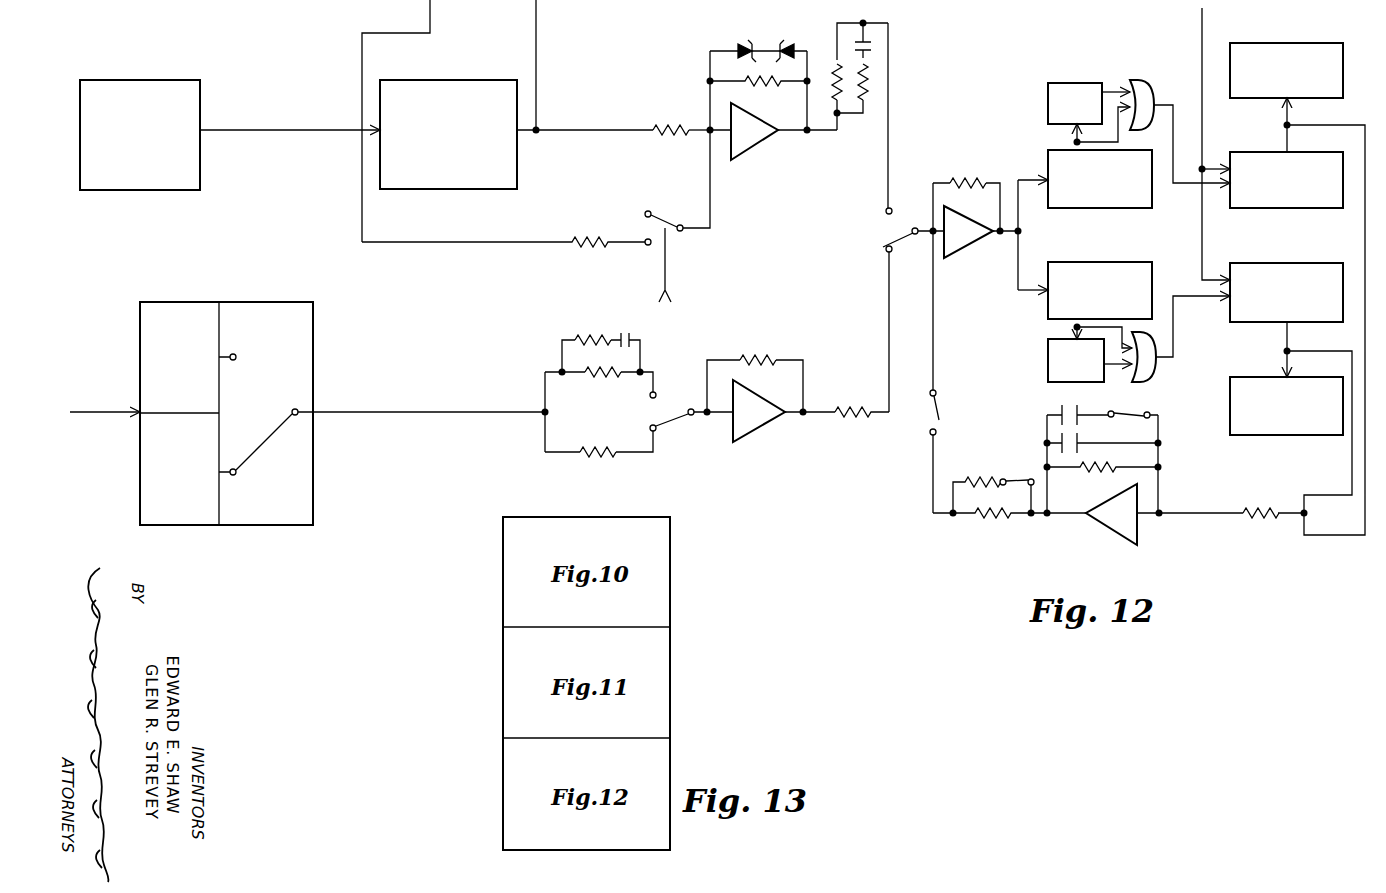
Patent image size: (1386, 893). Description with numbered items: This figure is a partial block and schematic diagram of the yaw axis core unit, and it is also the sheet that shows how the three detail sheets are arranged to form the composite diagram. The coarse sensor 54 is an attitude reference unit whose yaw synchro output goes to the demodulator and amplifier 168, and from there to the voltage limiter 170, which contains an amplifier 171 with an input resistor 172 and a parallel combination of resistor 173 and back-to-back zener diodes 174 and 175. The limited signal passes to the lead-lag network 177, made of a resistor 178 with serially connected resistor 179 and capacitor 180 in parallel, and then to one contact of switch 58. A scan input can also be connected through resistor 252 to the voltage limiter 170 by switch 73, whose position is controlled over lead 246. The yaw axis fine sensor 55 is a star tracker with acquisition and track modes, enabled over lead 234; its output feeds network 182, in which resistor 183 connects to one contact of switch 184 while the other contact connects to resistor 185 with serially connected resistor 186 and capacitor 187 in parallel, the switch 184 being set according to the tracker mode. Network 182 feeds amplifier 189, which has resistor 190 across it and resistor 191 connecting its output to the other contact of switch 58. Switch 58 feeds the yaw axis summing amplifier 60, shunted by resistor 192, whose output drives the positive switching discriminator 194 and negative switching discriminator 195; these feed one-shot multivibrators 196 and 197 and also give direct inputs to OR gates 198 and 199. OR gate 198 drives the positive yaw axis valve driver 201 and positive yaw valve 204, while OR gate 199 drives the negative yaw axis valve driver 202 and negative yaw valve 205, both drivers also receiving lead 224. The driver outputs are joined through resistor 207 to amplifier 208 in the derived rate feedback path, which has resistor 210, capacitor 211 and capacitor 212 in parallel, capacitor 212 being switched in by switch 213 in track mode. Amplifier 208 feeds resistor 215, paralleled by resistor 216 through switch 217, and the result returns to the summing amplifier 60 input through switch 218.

The coarse sensor 54 is at (201, 80).
The demodulator and amplifier 168 is at (497, 80).
The voltage limiter 170 is at (723, 88).
The amplifier 171 is at (757, 150).
The input resistor 172 is at (678, 136).
The resistor 173 is at (763, 88).
The zener diode 174 is at (758, 35).
The zener diode 175 is at (784, 37).
The lead-lag network 177 is at (865, 74).
The resistor 178 is at (843, 100).
The resistor 179 is at (872, 86).
The capacitor 180 is at (872, 50).
The switch 73 is at (661, 216).
The lead 246 is at (668, 283).
The resistor 252 is at (611, 232).
The yaw axis fine sensor 55 is at (316, 328).
The lead 234 is at (70, 412).
The network 182 is at (574, 378).
The resistor 183 is at (618, 425).
The switch 184 is at (673, 407).
The resistor 185 is at (612, 378).
The resistor 186 is at (596, 335).
The capacitor 187 is at (628, 335).
The amplifier 189 is at (771, 387).
The resistor 190 is at (780, 358).
The resistor 191 is at (870, 405).
The switch 58 is at (897, 230).
The yaw axis summing amplifier 60 is at (975, 208).
The resistor 192 is at (960, 190).
The positive switching discriminator 194 is at (1115, 210).
The negative switching discriminator 195 is at (1150, 262).
The one-shot multivibrator 196 is at (1060, 83).
The one-shot multivibrator 197 is at (1048, 365).
The OR gate 198 is at (1156, 96).
The OR gate 199 is at (1155, 350).
The positive yaw axis valve driver 201 is at (1265, 152).
The negative yaw axis valve driver 202 is at (1292, 263).
The positive yaw valve 204 is at (1305, 43).
The negative yaw valve 205 is at (1265, 377).
The lead 224 is at (1200, 20).
The resistor 207 is at (1243, 522).
The amplifier 208 is at (1098, 518).
The resistor 210 is at (1105, 475).
The capacitor 211 is at (1080, 425).
The capacitor 212 is at (1068, 405).
The switch 213 is at (1132, 412).
The resistor 215 is at (998, 512).
The resistor 216 is at (983, 480).
The switch 217 is at (1030, 478).
The switch 218 is at (937, 418).